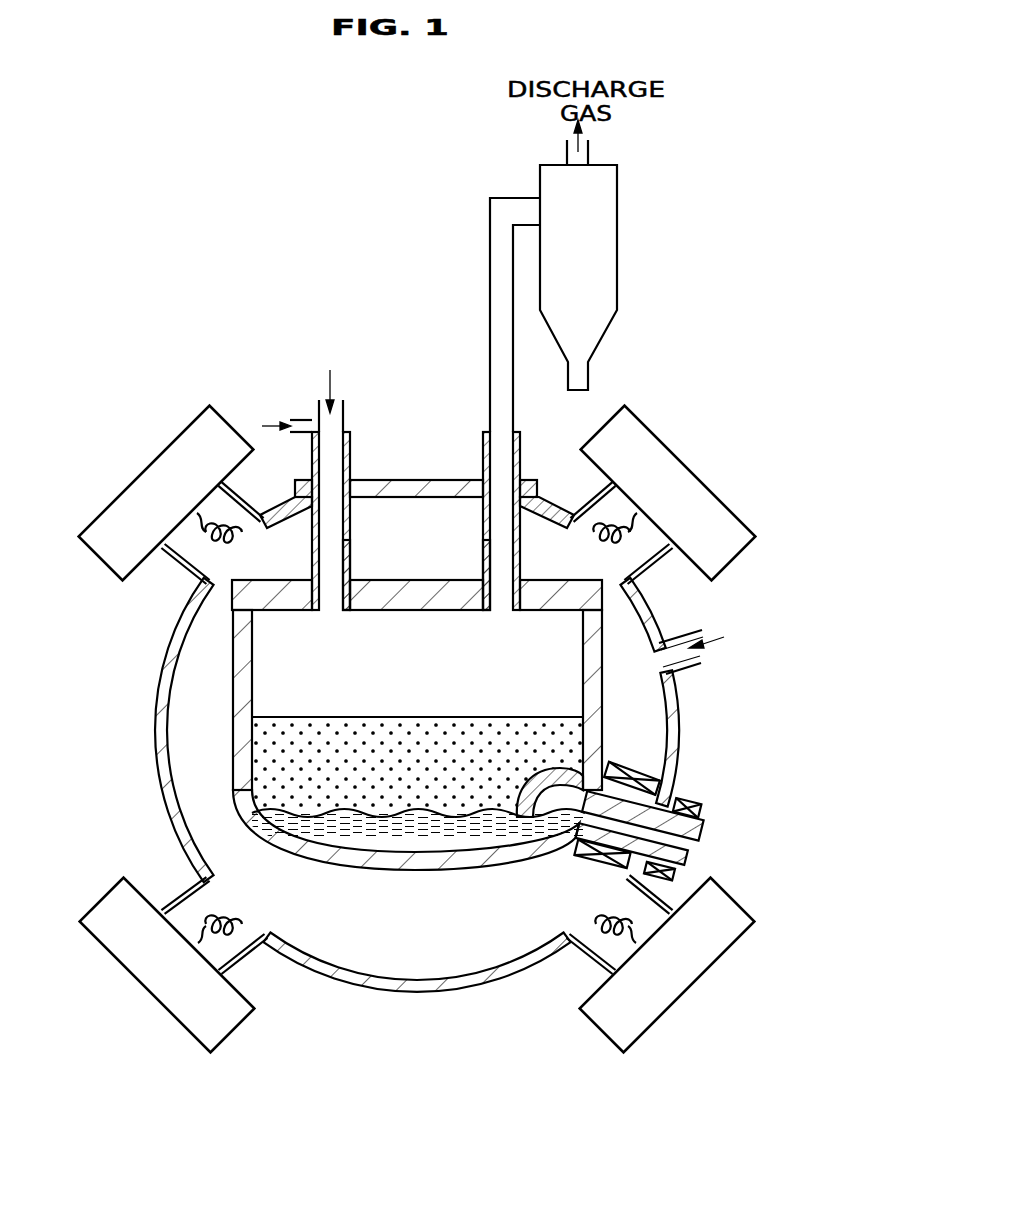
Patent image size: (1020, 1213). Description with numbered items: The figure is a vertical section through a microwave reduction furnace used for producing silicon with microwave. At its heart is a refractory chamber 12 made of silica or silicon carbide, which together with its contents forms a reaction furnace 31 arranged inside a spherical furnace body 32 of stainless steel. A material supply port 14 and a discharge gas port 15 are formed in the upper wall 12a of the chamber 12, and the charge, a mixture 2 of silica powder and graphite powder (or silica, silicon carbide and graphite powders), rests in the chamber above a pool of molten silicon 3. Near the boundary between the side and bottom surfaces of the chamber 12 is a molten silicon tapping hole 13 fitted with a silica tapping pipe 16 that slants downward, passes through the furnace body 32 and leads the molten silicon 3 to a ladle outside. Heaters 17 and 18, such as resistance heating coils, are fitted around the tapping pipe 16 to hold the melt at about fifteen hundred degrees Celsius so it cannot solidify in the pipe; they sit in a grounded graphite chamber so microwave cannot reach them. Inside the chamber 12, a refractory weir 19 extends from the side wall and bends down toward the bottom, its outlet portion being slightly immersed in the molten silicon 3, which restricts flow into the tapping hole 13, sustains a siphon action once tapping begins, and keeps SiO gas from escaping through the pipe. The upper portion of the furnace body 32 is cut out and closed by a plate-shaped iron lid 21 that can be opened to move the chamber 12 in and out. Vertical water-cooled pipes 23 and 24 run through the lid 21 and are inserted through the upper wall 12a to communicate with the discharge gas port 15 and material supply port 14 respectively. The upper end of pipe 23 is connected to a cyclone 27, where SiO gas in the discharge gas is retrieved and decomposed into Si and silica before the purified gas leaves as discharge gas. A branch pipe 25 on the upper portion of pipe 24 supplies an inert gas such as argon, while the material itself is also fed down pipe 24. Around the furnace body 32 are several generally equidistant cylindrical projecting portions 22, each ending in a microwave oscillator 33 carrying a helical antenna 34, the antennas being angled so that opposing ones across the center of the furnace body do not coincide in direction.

The mixture 2 is at (350, 767).
The molten silicon 3 is at (430, 838).
The refractory chamber 12 is at (243, 768).
The upper wall 12a is at (425, 600).
The molten silicon tapping hole 13 is at (680, 847).
The material supply port 14 is at (352, 577).
The discharge gas port 15 is at (480, 567).
The tapping pipe 16 is at (693, 828).
The heater 17 is at (640, 763).
The heater 18 is at (690, 805).
The weir 19 is at (548, 770).
The lid 21 is at (429, 480).
The cylindrical projecting portion 22 is at (178, 562).
The water-cooled pipe 23 is at (522, 448).
The water-cooled pipe 24 is at (350, 440).
The branch pipe 25 is at (290, 420).
The cyclone 27 is at (595, 262).
The reaction furnace 31 is at (207, 714).
The furnace body 32 is at (168, 650).
The microwave oscillator 33 is at (150, 468).
The helical antenna 34 is at (220, 527).